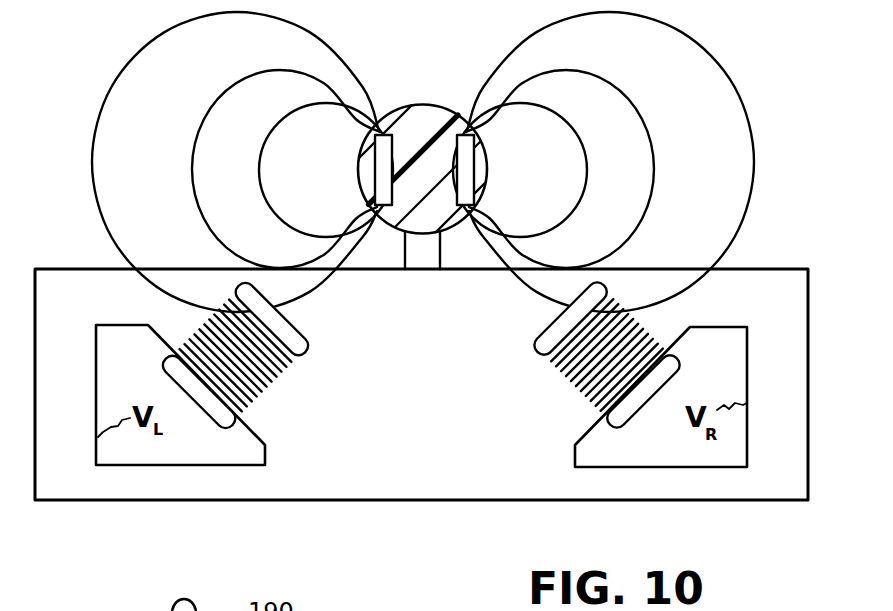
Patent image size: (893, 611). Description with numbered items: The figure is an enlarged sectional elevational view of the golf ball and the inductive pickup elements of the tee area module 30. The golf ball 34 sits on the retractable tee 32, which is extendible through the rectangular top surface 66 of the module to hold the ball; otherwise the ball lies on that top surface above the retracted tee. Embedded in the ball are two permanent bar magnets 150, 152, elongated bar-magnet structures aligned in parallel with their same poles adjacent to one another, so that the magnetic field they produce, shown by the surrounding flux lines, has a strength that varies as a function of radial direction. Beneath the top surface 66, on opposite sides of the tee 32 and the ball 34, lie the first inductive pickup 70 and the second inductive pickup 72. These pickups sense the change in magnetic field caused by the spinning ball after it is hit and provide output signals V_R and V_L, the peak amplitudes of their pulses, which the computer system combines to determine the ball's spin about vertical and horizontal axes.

The sensor assembly 30 is at (426, 476).
The retractable tee 32 is at (422, 257).
The golf ball 34 is at (441, 104).
The top surface 66 is at (768, 269).
The first inductive pickup 70 is at (571, 383).
The second inductive pickup 72 is at (271, 386).
The permanent bar magnet 150 is at (375, 178).
The permanent bar magnet 152 is at (474, 172).